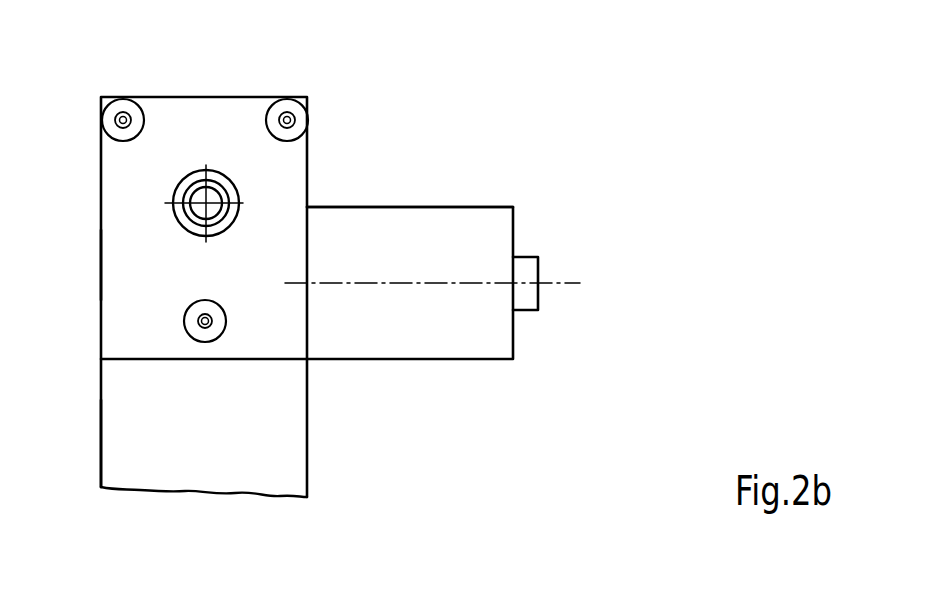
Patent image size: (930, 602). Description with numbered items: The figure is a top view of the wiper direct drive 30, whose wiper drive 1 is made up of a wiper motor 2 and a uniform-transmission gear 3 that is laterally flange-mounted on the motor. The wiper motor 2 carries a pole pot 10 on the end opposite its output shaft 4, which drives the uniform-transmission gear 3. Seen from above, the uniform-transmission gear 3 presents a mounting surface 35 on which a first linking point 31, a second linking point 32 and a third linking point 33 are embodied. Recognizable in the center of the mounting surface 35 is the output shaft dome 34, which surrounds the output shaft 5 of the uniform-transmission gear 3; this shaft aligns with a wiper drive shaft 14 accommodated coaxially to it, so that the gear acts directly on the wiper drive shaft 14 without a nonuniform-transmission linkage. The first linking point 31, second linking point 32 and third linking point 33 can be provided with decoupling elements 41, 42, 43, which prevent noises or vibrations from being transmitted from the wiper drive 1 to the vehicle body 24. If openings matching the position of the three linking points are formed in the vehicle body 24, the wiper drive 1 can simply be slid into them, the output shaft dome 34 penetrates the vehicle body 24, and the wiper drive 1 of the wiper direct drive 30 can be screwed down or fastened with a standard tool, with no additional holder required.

The wiper drive 1 is at (447, 153).
The wiper direct drive 30 is at (477, 170).
The wiper motor 2 is at (453, 350).
The uniform-transmission gear 3 is at (280, 345).
The output shaft of the wiper motor 4 is at (555, 284).
The output shaft 5 is at (286, 203).
The wiper drive shaft 14 is at (243, 203).
The pole pot 10 is at (527, 302).
The vehicle body 24 is at (125, 460).
The first linking point 31 is at (133, 86).
The decoupling element 41 is at (123, 118).
The second linking point 32 is at (130, 350).
The decoupling element 42 is at (187, 326).
The third linking point 33 is at (334, 118).
The decoupling element 43 is at (289, 120).
The output shaft dome 34 is at (232, 178).
The mounting surface 35 is at (123, 277).